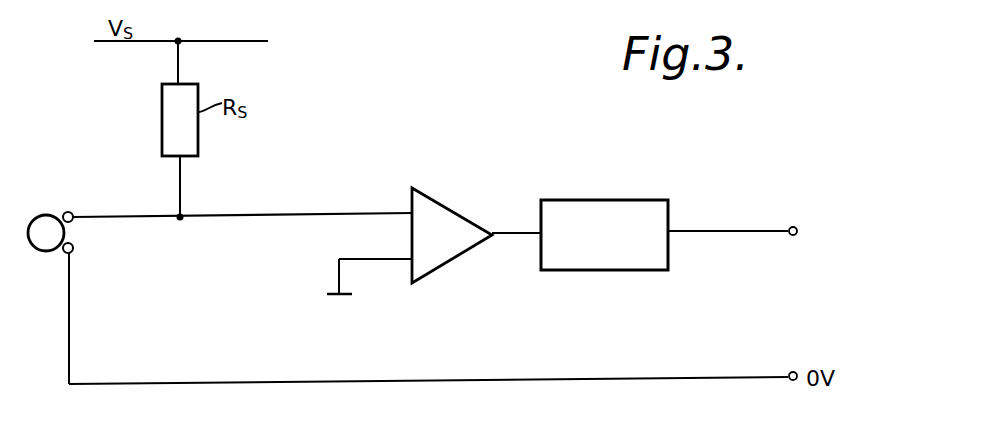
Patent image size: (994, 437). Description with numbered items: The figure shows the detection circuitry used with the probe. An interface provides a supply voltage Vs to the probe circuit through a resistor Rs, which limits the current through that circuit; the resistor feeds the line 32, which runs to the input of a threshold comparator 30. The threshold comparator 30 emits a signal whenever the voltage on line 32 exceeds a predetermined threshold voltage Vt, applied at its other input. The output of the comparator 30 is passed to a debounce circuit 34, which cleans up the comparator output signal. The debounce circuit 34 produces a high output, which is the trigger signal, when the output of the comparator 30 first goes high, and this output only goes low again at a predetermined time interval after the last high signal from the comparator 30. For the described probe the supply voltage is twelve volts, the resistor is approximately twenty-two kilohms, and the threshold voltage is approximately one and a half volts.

The threshold comparator 30 is at (447, 205).
The line 32 is at (327, 212).
The debounce circuit 34 is at (618, 199).